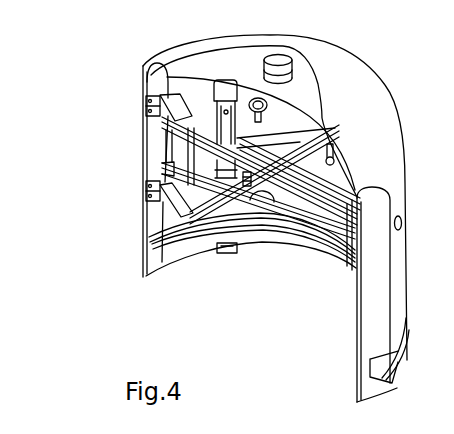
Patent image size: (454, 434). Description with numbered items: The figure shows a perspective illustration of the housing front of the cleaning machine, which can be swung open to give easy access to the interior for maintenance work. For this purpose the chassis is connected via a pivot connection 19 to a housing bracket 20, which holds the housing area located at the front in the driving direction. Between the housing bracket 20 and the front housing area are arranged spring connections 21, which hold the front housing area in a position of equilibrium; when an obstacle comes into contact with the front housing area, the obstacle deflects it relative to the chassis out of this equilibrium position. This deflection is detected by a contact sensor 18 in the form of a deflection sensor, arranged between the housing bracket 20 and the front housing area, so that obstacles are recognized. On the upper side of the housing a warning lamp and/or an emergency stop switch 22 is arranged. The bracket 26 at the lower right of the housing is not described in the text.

The contact sensor 18 is at (330, 152).
The pivot connection 19 is at (146, 195).
The housing bracket 20 is at (186, 262).
The spring connections 21 is at (220, 258).
The warning lamp and/or emergency stop switch 22 is at (292, 66).
The bracket 26 is at (380, 372).